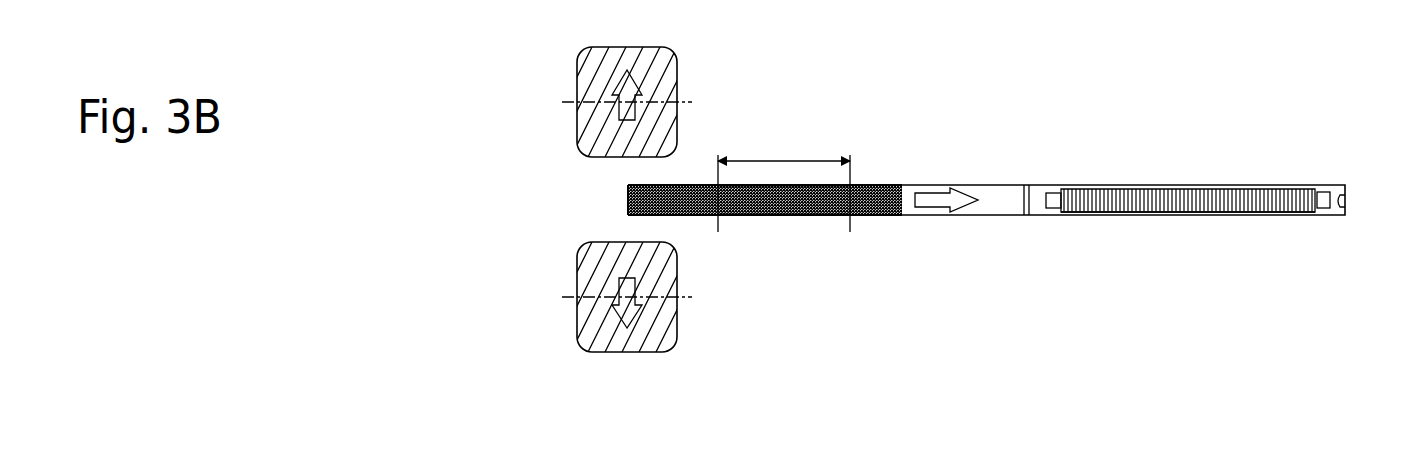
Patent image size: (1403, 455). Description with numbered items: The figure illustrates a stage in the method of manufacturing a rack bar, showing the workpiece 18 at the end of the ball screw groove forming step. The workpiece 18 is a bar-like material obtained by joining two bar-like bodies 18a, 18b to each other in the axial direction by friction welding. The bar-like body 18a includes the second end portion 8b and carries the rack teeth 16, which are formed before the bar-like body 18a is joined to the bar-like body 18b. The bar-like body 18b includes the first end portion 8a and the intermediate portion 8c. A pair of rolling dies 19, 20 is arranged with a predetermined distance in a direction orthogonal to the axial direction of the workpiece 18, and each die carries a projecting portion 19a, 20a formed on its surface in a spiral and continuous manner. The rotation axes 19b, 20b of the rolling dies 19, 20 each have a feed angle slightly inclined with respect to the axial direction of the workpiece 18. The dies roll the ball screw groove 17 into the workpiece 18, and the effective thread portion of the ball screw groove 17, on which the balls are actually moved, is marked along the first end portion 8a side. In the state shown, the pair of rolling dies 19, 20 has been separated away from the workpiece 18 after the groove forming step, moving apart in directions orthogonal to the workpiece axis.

The first end portion 8a is at (628, 203).
The second end portion 8b is at (1338, 216).
The intermediate portion 8c is at (1013, 185).
The rack teeth 16 is at (1197, 188).
The ball screw groove 17 is at (785, 216).
The workpiece 18 is at (1339, 181).
The bar-like body 18a is at (1190, 216).
The bar-like body 18b is at (742, 216).
The rolling die 19 is at (674, 46).
The projecting portion 19a is at (665, 82).
The rotation axis 19b is at (570, 102).
The rolling die 20 is at (674, 353).
The projecting portion 20a is at (665, 318).
The rotation axis 20b is at (570, 297).